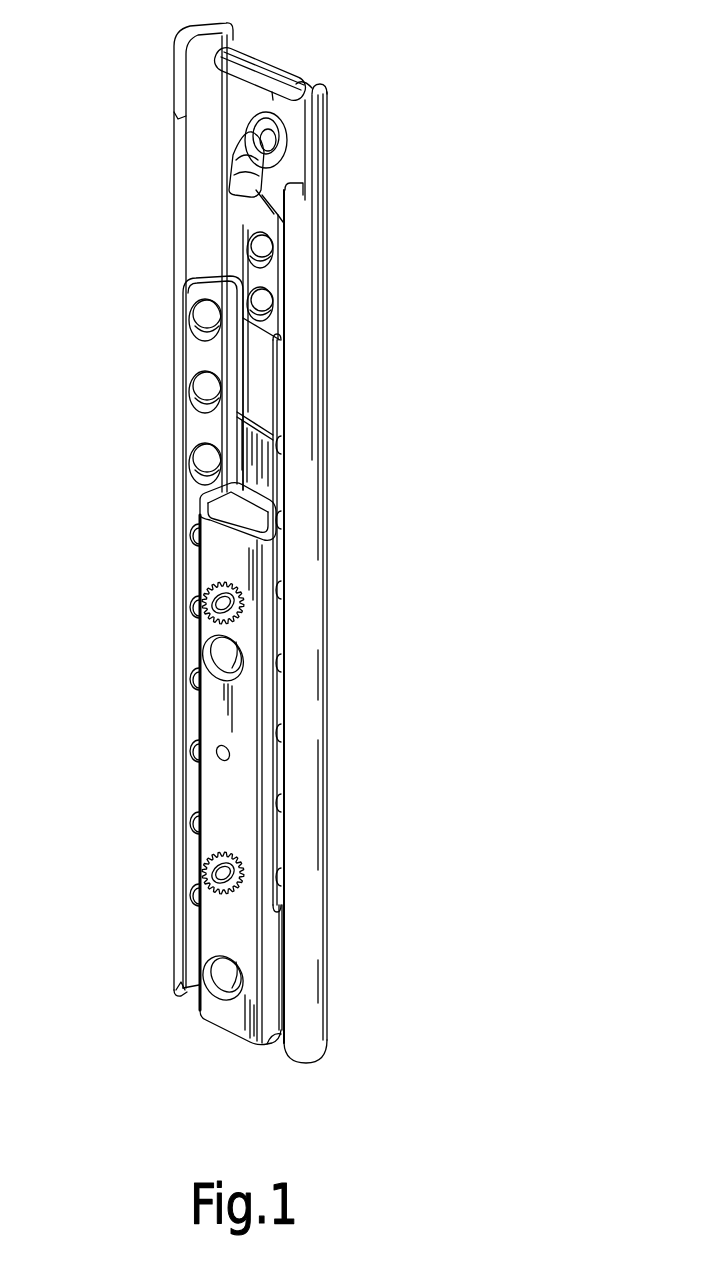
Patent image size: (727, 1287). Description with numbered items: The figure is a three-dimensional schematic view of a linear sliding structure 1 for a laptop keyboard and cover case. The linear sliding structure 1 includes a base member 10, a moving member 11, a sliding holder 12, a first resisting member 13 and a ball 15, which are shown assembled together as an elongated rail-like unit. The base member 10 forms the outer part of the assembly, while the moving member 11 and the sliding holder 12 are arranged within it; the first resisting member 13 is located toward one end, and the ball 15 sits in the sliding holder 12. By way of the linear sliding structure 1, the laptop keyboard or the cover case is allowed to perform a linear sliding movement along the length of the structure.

The linear sliding structure 1 is at (316, 538).
The base member 10 is at (327, 160).
The moving member 11 is at (209, 783).
The sliding holder 12 is at (142, 632).
The first resisting member 13 is at (221, 173).
The ball 15 is at (186, 463).